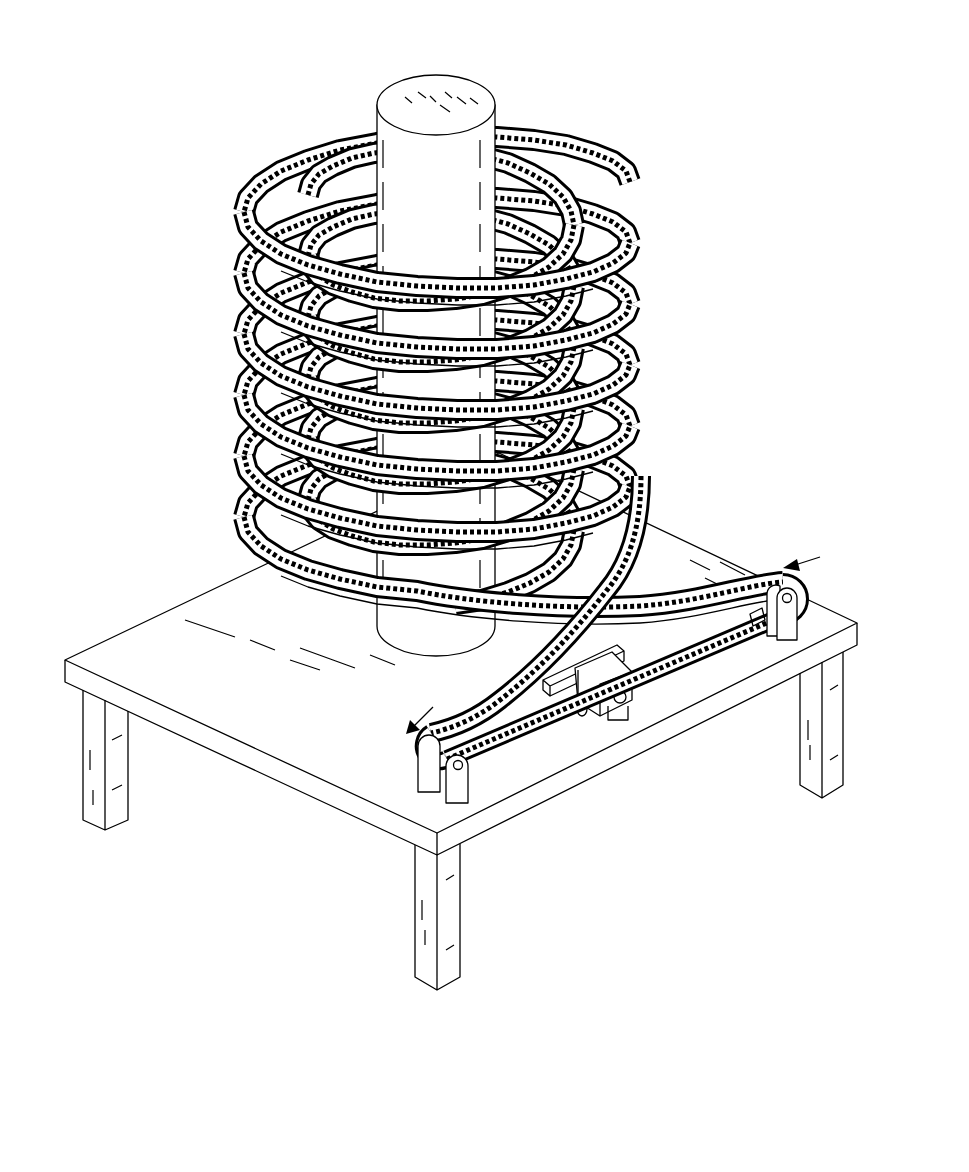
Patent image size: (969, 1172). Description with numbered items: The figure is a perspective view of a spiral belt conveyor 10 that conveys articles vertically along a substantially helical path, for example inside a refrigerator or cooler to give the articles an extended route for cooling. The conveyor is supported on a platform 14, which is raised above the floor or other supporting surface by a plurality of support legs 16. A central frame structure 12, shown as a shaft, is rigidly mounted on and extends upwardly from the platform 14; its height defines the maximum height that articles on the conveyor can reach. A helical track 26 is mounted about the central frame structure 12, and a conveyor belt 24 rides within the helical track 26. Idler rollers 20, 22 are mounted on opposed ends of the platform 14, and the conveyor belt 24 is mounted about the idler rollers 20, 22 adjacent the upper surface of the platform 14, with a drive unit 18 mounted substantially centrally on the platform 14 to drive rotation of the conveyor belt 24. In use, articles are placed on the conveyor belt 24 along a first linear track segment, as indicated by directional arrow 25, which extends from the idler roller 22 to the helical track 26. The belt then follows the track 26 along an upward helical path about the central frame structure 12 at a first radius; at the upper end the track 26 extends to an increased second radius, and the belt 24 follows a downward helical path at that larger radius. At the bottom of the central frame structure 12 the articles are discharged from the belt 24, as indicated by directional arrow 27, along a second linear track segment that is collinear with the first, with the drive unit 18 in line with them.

The spiral belt conveyor 10 is at (116, 70).
The central frame structure 12 is at (477, 83).
The platform 14 is at (128, 576).
The support legs 16 is at (128, 805).
The drive unit 18 is at (627, 717).
The idler roller 20 is at (467, 766).
The idler roller 22 is at (798, 598).
The conveyor belt 24 is at (693, 587).
The directional arrow 25 is at (800, 563).
The helical track 26 is at (457, 381).
The directional arrow 27 is at (414, 714).